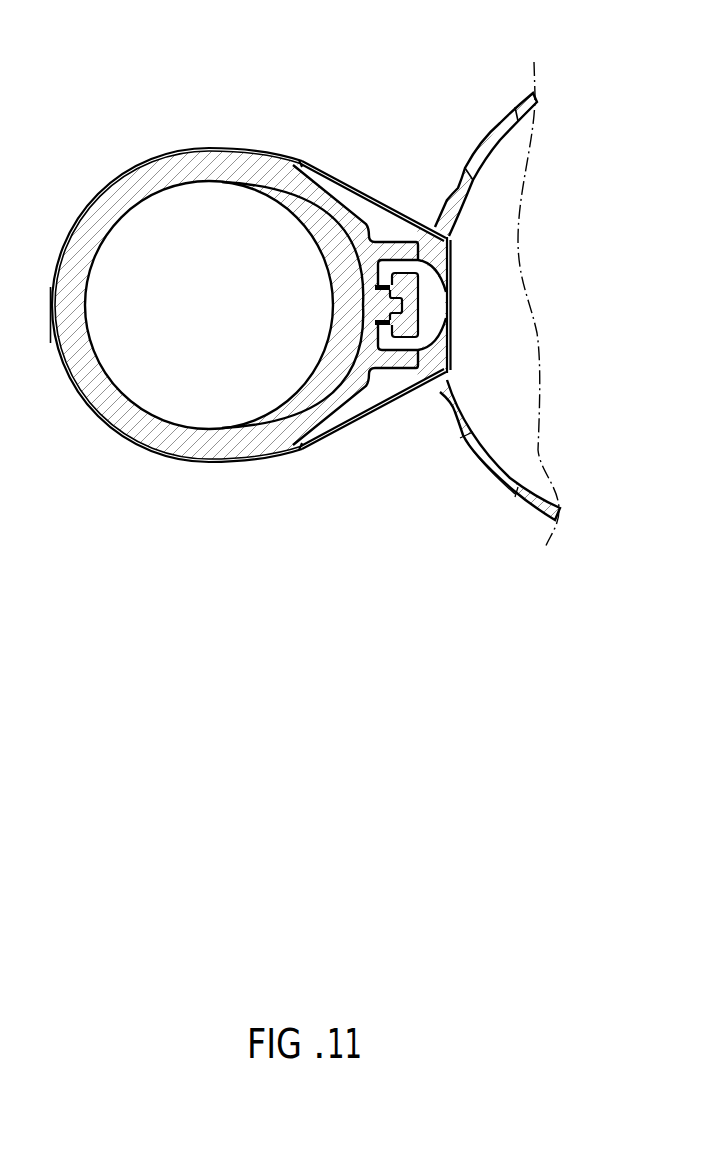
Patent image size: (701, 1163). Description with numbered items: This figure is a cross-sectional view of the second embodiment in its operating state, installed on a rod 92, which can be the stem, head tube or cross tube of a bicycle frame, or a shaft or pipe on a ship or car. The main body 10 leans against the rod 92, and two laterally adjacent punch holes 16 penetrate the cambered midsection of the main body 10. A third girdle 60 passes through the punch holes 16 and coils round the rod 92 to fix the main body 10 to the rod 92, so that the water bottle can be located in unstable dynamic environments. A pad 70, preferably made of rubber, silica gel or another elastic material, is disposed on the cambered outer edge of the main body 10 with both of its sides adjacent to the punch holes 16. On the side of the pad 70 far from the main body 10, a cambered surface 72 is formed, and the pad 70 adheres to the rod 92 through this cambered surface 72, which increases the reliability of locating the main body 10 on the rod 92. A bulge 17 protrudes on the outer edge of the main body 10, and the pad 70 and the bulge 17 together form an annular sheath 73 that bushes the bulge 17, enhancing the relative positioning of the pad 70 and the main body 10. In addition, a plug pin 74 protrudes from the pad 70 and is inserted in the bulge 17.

The main body 10 is at (467, 116).
The punch holes 16 is at (443, 222).
The bulge 17 is at (398, 340).
The third girdle 60 is at (323, 437).
The pad 70 is at (332, 202).
The cambered surface 72 is at (272, 208).
The annular sheath 73 is at (378, 363).
The plug pin 74 is at (393, 305).
The rod 92 is at (187, 443).